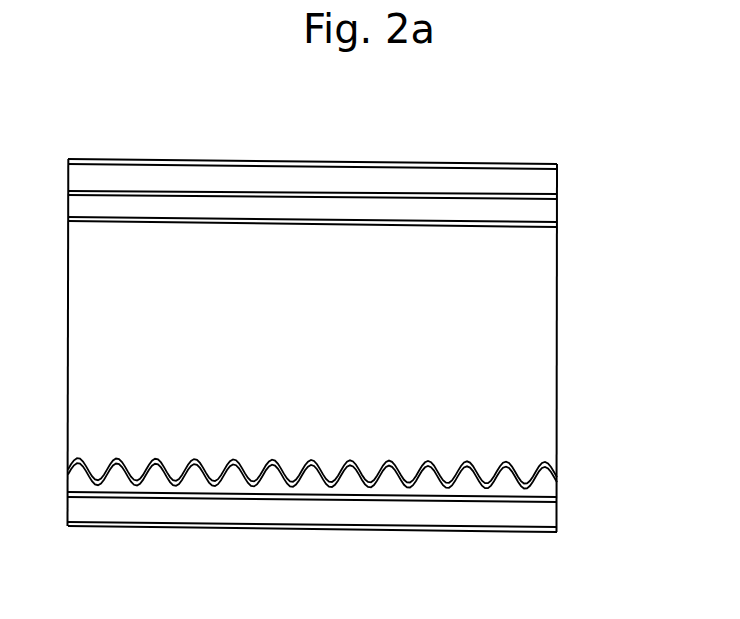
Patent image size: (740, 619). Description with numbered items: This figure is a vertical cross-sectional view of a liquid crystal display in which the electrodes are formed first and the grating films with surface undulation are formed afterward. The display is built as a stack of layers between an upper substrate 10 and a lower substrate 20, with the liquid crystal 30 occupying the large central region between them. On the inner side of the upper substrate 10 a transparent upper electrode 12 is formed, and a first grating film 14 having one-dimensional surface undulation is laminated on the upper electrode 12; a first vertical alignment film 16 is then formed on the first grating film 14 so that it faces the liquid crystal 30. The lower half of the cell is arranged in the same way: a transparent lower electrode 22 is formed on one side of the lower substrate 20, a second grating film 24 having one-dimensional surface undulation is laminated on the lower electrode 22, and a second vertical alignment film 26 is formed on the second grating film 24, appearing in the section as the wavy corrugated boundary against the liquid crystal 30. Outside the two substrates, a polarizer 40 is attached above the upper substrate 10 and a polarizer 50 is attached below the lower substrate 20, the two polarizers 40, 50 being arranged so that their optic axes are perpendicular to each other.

The polarizer 40 is at (557, 163).
The upper substrate 10 is at (553, 182).
The upper electrode 12 is at (555, 198).
The first grating film 14 is at (553, 212).
The first vertical alignment film 16 is at (557, 227).
The liquid crystal 30 is at (537, 354).
The second vertical alignment film 26 is at (557, 473).
The second grating film 24 is at (551, 489).
The lower electrode 22 is at (557, 500).
The lower substrate 20 is at (545, 518).
The polarizer 50 is at (542, 532).